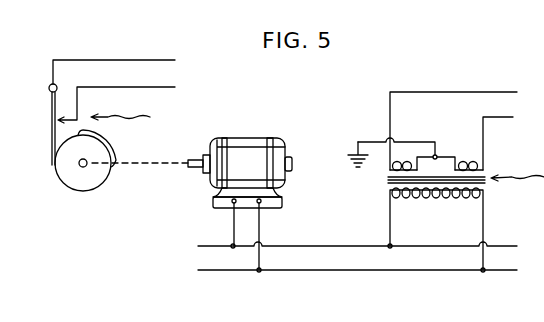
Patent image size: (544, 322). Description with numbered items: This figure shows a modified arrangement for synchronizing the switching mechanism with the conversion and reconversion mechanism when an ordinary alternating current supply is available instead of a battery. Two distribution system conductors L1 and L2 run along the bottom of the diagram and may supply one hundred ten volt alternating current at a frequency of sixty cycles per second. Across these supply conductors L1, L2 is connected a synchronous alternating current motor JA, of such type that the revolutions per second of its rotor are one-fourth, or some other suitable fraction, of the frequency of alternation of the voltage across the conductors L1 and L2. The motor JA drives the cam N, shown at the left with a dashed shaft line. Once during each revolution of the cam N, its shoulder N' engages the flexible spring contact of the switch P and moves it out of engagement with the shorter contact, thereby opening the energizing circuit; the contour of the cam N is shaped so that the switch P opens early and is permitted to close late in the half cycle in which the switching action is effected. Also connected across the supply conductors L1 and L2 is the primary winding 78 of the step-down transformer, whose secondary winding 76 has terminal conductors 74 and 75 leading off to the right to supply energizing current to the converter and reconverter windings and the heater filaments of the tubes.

The cam N is at (76, 167).
The shoulder N' is at (108, 148).
The switch P is at (128, 120).
The synchronous alternating current motor JA is at (265, 140).
The distribution system conductor L1 is at (344, 245).
The distribution system conductor L2 is at (353, 271).
The terminal conductor 74 is at (499, 93).
The terminal conductor 75 is at (520, 108).
The secondary winding 76 is at (468, 164).
The primary winding 78 is at (432, 198).